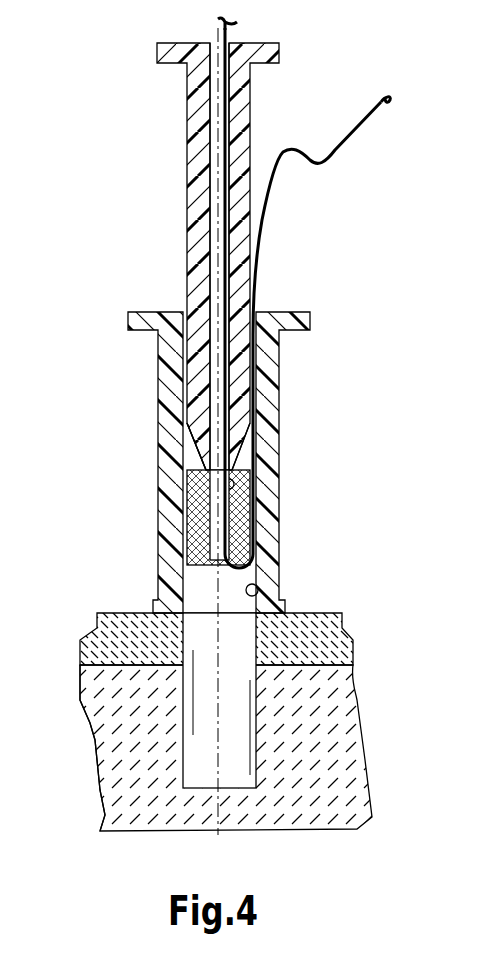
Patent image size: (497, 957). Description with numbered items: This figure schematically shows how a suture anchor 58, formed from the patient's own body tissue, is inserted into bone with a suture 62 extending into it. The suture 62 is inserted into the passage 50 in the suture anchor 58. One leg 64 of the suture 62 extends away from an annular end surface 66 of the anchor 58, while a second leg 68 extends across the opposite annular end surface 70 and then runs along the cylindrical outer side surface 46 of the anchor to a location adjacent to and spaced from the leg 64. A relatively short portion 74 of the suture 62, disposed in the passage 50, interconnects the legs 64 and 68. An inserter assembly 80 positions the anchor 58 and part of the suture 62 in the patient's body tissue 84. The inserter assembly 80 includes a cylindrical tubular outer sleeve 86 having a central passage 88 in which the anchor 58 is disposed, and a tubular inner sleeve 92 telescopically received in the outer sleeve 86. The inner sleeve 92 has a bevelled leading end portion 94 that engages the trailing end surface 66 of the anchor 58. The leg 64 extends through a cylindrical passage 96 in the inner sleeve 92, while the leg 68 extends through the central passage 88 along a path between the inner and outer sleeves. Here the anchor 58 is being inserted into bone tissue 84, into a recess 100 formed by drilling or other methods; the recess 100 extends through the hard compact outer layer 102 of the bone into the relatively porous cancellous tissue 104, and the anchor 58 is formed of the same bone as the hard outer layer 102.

The cylindrical outer side surface 46 is at (194, 489).
The passage 50 is at (208, 520).
The suture anchor 58 is at (268, 503).
The suture 62 is at (266, 249).
The leg portion of suture 64 is at (228, 24).
The annular end surface 66 is at (190, 462).
The second leg portion of suture 68 is at (366, 126).
The annular end surface 70 is at (250, 548).
The short portion of suture 74 is at (238, 490).
The inserter assembly 80 is at (125, 338).
The body tissue 84 is at (85, 725).
The outer sleeve 86 is at (290, 391).
The central passage 88 is at (262, 592).
The inner sleeve 92 is at (193, 116).
The bevelled leading end portion 94 is at (200, 437).
The cylindrical passage 96 is at (214, 203).
The recess 100 is at (185, 790).
The hard compact outer layer 102 is at (340, 637).
The cancellous tissue 104 is at (340, 740).